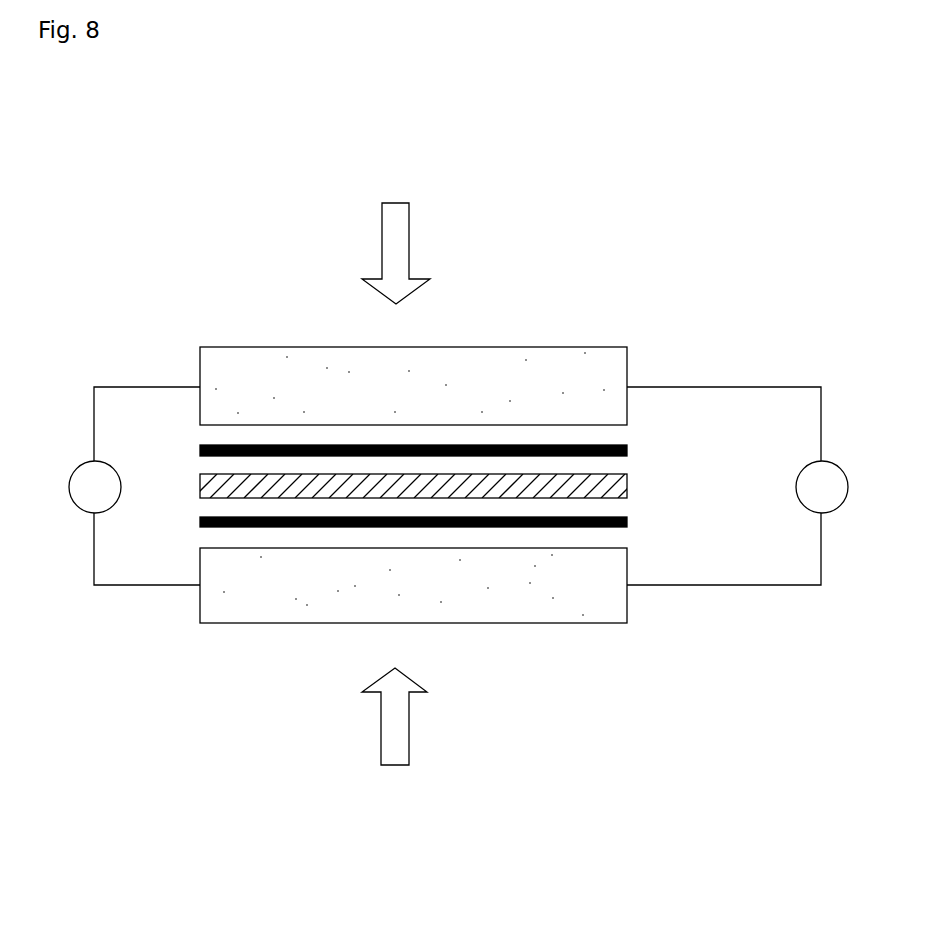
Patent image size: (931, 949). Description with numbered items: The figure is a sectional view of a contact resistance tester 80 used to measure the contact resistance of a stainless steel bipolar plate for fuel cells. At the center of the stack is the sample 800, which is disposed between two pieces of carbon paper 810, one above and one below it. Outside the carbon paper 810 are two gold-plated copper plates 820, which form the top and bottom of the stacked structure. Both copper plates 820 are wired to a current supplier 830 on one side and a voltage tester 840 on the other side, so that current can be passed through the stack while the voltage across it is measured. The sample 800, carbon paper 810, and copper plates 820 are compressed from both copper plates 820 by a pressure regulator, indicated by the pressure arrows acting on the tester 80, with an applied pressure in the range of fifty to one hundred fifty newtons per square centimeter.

The contact resistance tester 80 is at (119, 105).
The sample 800 is at (628, 488).
The carbon paper 810 is at (630, 447).
The gold-plated copper plates 820 is at (238, 368).
The current supplier 830 is at (803, 470).
The voltage tester 840 is at (84, 502).